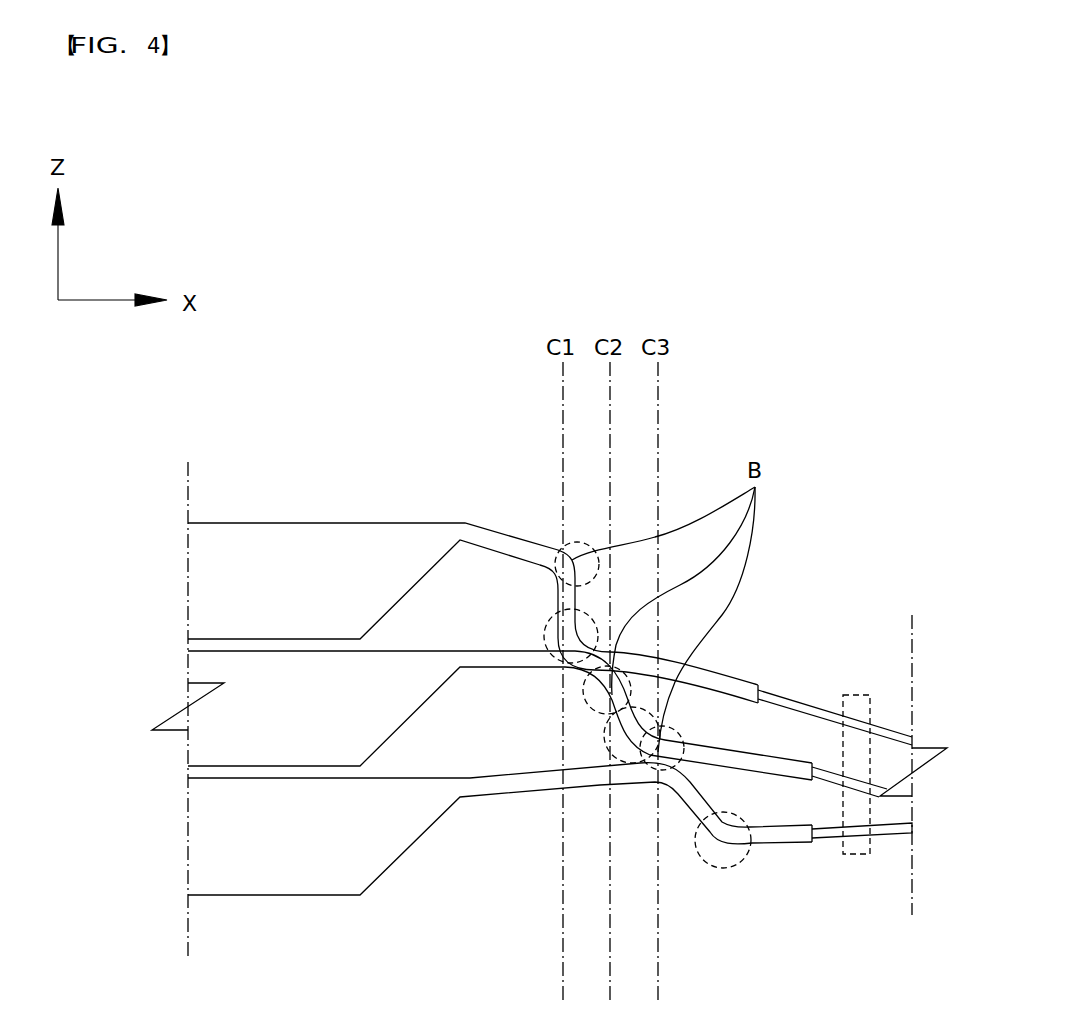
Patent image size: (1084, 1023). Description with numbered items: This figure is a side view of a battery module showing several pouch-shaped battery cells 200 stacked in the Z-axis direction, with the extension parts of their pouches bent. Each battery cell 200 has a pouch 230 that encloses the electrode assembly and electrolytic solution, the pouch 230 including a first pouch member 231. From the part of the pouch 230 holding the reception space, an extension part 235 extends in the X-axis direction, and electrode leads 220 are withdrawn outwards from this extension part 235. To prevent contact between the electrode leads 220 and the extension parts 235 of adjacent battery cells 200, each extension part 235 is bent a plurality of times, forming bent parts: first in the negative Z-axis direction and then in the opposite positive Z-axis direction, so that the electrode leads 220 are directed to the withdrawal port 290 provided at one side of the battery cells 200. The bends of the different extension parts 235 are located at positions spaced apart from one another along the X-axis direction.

The battery cell 200 is at (218, 592).
The electrode lead 220 is at (787, 702).
The pouch 230 is at (243, 512).
The first pouch member 231 is at (313, 548).
The extension part 235 is at (515, 540).
The withdrawal port 290 is at (862, 856).